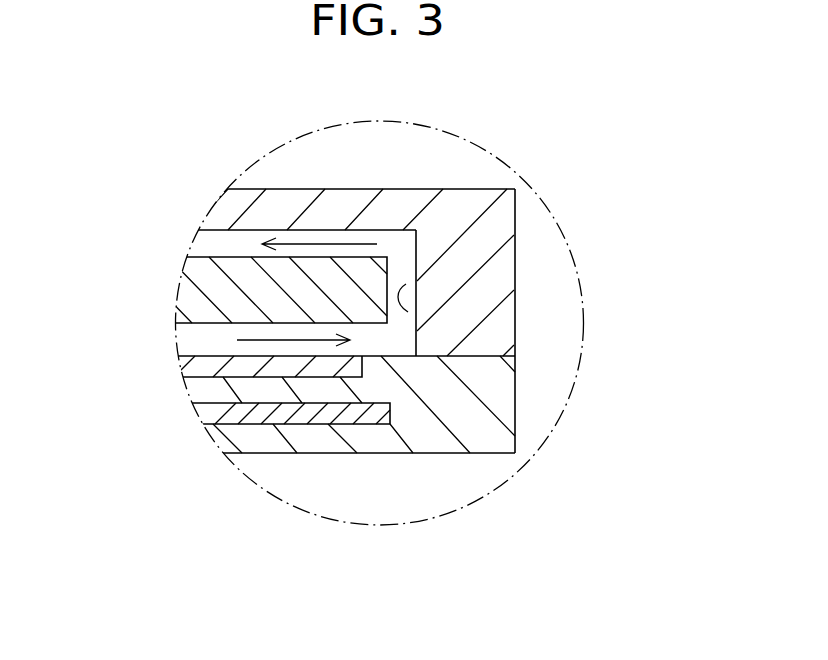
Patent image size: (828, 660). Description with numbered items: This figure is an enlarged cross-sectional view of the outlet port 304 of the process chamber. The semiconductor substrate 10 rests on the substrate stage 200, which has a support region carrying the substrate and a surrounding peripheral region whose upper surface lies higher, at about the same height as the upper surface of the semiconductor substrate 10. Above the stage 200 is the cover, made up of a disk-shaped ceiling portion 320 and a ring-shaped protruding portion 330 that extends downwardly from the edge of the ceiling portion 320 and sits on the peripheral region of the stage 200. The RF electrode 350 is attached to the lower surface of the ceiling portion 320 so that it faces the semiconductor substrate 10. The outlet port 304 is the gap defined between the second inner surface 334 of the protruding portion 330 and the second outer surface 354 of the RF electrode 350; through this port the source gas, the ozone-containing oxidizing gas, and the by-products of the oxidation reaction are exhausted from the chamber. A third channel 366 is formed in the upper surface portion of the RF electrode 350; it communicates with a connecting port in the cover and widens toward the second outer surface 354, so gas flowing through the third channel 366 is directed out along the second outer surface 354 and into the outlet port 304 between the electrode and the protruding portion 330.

The ceiling portion 320 is at (287, 196).
The protruding portion 330 is at (497, 287).
The second outer surface 354 is at (417, 272).
The third channel 366 is at (226, 253).
The RF electrode 350 is at (185, 293).
The second inner surface 334 is at (388, 280).
The outlet port 304 is at (400, 329).
The substrate stage 200 is at (435, 441).
The semiconductor substrate 10 is at (183, 362).